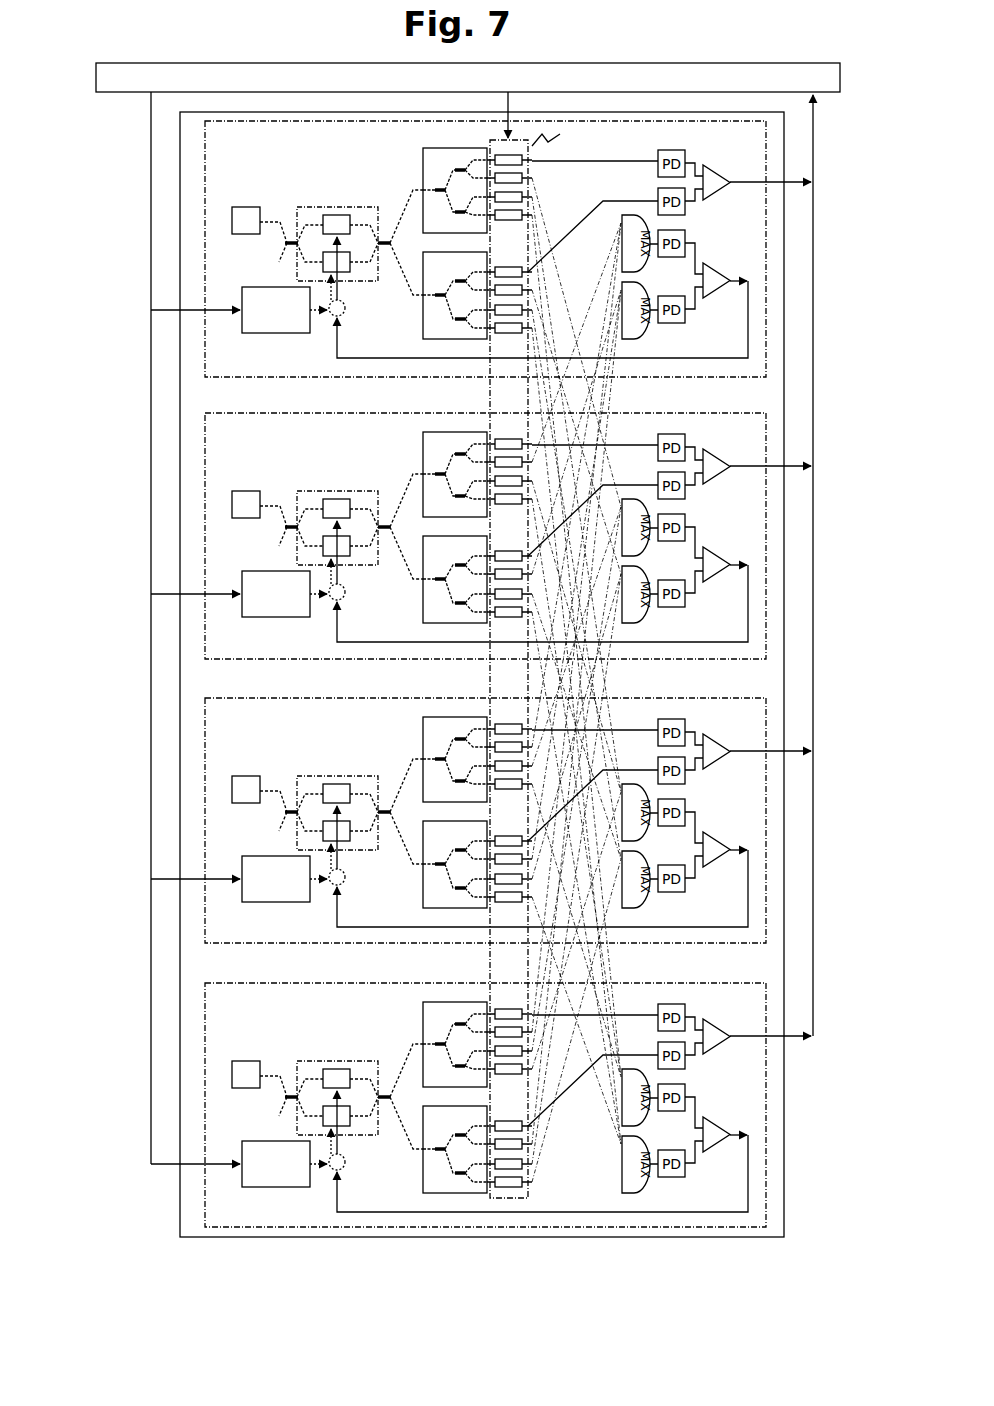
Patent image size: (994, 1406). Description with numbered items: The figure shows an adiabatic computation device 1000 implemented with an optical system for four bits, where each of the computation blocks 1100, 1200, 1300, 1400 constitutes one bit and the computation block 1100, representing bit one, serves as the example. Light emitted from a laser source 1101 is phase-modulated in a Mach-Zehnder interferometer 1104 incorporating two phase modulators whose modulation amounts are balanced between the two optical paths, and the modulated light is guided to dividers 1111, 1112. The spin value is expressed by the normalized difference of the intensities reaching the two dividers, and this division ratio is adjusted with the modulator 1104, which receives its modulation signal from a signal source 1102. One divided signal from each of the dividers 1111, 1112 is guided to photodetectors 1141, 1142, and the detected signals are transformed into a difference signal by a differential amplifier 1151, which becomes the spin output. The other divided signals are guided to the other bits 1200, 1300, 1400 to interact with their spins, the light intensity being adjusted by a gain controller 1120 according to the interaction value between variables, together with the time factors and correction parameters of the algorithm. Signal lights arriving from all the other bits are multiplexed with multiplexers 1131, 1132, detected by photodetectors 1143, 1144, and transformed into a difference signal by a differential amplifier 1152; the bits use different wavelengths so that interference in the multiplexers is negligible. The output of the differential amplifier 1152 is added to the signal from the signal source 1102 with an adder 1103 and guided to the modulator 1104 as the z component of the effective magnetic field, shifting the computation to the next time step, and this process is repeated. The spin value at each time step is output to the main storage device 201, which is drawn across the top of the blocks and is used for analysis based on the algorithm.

The main storage device 201 is at (125, 93).
The adiabatic computation device 1000 is at (180, 158).
The computation block 1100 is at (205, 212).
The laser source 1101 is at (247, 206).
The signal source 1102 is at (277, 334).
The adder 1103 is at (330, 317).
The Mach-Zehnder interferometer 1104 is at (297, 215).
The divider 1111 is at (418, 185).
The divider 1112 is at (418, 312).
The gain controller 1120 is at (490, 148).
The multiplexer 1131 is at (620, 222).
The multiplexer 1132 is at (648, 335).
The photodetector 1141 is at (670, 148).
The photodetector 1142 is at (685, 209).
The photodetector 1143 is at (685, 233).
The photodetector 1144 is at (685, 318).
The differential amplifier 1151 is at (716, 173).
The differential amplifier 1152 is at (715, 275).
The computation block 1200 is at (205, 462).
The computation block 1300 is at (205, 747).
The computation block 1400 is at (205, 1032).